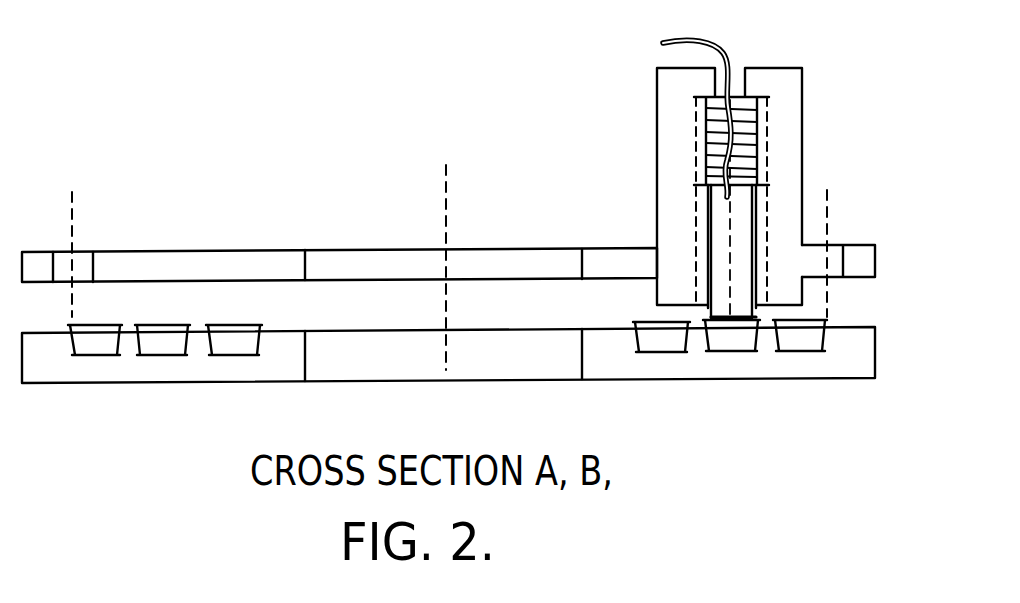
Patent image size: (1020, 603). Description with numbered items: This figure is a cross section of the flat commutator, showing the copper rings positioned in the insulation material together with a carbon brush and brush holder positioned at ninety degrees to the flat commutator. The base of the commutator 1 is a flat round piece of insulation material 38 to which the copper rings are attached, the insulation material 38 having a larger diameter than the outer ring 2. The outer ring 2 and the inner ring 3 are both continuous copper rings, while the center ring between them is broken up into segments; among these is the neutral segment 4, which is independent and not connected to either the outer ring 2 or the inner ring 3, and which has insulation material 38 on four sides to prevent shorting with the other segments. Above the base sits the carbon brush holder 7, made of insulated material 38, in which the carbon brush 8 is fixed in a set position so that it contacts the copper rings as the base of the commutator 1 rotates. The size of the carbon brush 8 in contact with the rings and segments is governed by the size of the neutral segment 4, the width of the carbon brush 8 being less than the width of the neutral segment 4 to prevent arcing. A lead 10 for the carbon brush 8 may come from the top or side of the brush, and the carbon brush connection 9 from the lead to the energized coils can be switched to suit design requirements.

The base of the commutator 1 is at (597, 385).
The outer ring 2 is at (100, 345).
The inner ring 3 is at (237, 345).
The neutral segment 4 is at (165, 345).
The carbon brush holder 7 is at (673, 258).
The carbon brush 8 is at (737, 214).
The carbon brush connection 9 is at (739, 136).
The lead 10 is at (738, 52).
The insulation material 38 is at (609, 355).